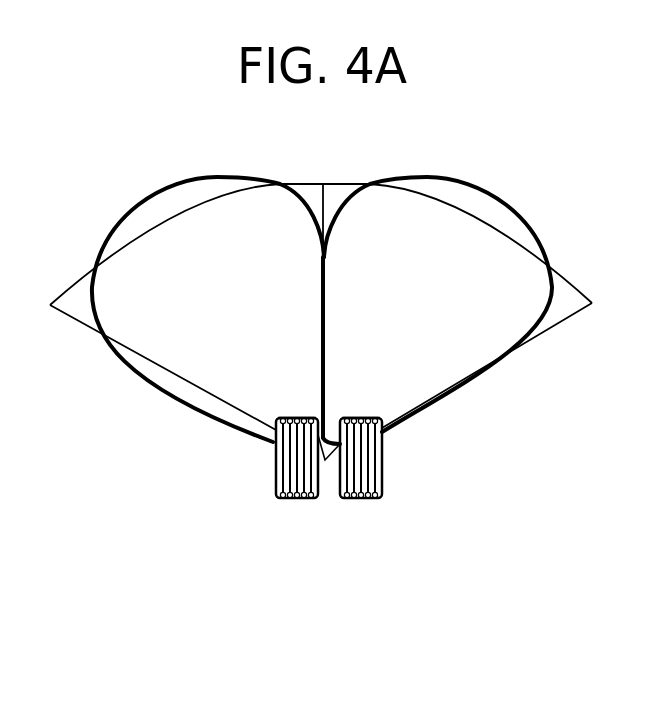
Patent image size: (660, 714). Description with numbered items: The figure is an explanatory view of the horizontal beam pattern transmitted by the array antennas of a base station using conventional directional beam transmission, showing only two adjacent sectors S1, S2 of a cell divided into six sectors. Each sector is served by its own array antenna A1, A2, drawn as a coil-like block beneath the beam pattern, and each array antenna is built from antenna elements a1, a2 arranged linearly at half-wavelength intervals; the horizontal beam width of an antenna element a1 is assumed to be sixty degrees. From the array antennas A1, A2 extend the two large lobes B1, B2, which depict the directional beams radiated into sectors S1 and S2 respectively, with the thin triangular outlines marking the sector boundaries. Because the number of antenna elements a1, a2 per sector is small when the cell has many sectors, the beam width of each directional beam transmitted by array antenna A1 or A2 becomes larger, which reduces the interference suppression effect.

The sector S1 is at (75, 292).
The sector S2 is at (571, 292).
The first magnetic flux loop B1 is at (135, 370).
The second magnetic flux loop B2 is at (475, 382).
The array antenna A1 is at (287, 497).
The array antenna A2 is at (357, 497).
The antenna element a1 is at (280, 413).
The antenna element a2 is at (380, 420).